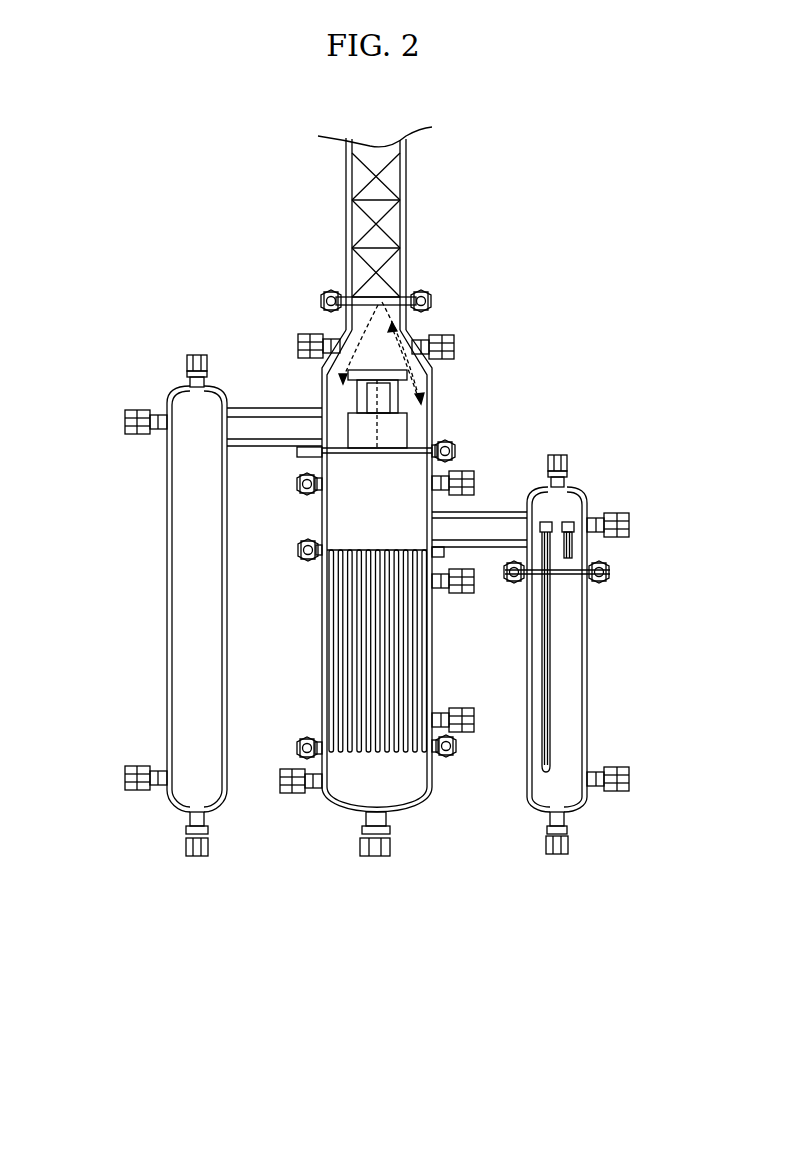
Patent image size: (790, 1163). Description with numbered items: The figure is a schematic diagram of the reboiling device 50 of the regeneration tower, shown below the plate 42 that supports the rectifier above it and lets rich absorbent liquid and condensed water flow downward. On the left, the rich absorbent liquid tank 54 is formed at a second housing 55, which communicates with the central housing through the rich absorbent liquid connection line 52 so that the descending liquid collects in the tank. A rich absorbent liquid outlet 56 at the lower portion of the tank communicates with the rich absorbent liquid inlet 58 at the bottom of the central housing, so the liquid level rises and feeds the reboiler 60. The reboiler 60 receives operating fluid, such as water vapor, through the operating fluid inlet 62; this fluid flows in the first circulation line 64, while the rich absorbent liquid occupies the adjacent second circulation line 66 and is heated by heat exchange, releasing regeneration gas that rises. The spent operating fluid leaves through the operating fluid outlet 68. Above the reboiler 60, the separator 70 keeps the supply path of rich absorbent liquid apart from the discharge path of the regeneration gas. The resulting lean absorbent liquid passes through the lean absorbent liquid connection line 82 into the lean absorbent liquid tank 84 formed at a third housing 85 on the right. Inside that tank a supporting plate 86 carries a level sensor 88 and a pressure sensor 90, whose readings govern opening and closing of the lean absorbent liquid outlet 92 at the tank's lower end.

The reboiling device 50 is at (250, 302).
The plate 42 is at (400, 322).
The rich absorbent liquid connection line 52 is at (275, 408).
The rich absorbent liquid tank 54 is at (152, 586).
The second housing 55 is at (167, 483).
The rich absorbent liquid outlet 56 is at (199, 858).
The rich absorbent liquid inlet 58 is at (377, 858).
The reboiler 60 is at (444, 638).
The operating fluid inlet 62 is at (478, 590).
The first circulation line 64 is at (398, 548).
The second circulation line 66 is at (418, 548).
The operating fluid outlet 68 is at (478, 730).
The separator 70 is at (435, 392).
The lean absorbent liquid connection line 82 is at (525, 510).
The lean absorbent liquid tank 84 is at (602, 484).
The third housing 85 is at (590, 622).
The supporting plate 86 is at (600, 552).
The level sensor 88 is at (563, 520).
The pressure sensor 90 is at (573, 500).
The lean absorbent liquid outlet 92 is at (558, 858).